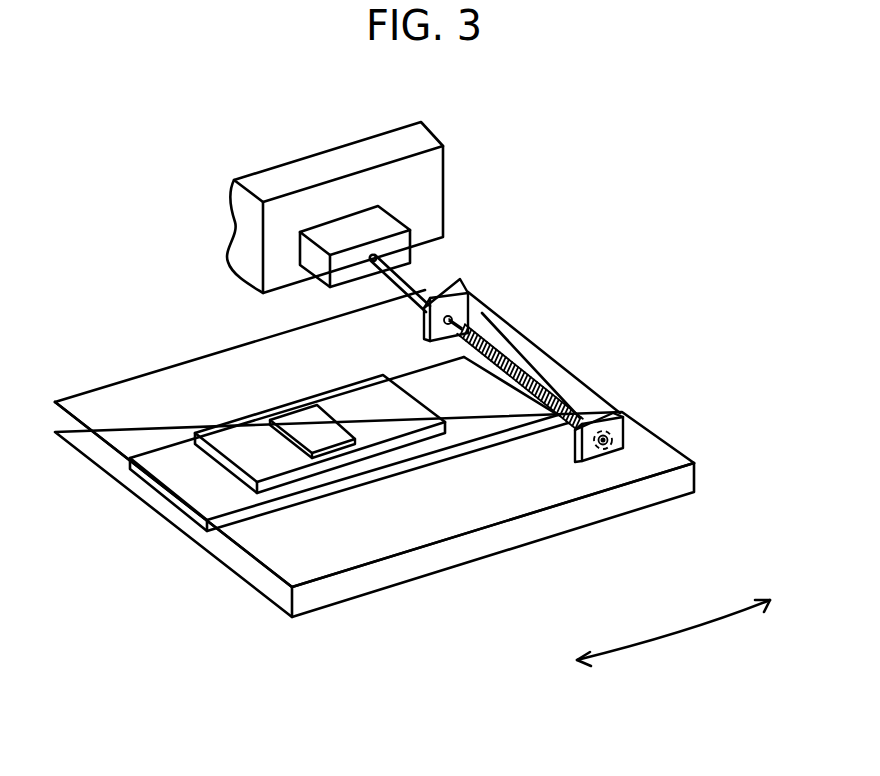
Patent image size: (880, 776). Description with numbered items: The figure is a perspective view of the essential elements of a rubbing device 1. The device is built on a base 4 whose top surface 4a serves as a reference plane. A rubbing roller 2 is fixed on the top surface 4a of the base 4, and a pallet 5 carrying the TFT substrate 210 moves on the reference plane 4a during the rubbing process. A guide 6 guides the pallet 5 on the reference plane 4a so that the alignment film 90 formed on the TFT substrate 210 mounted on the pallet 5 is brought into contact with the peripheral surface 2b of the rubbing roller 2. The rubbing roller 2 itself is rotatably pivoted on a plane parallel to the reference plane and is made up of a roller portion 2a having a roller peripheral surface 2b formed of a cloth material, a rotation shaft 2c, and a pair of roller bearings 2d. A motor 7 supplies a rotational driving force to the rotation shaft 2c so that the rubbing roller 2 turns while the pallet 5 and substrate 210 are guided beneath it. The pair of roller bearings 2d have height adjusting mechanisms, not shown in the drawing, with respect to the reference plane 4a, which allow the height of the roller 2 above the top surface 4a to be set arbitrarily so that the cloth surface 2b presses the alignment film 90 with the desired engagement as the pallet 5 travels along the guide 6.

The rubbing device 1 is at (617, 241).
The rubbing roller 2 is at (528, 245).
The roller portion 2a is at (590, 391).
The roller peripheral surface 2b is at (541, 373).
The rotation shaft 2c is at (470, 315).
The roller bearings 2d is at (463, 285).
The base 4 is at (374, 488).
The top surface of the base 4a is at (397, 518).
The pallet 5 is at (223, 433).
The guide 6 is at (475, 418).
The motor 7 is at (435, 185).
The alignment film 90 is at (267, 507).
The TFT substrate 210 is at (331, 445).